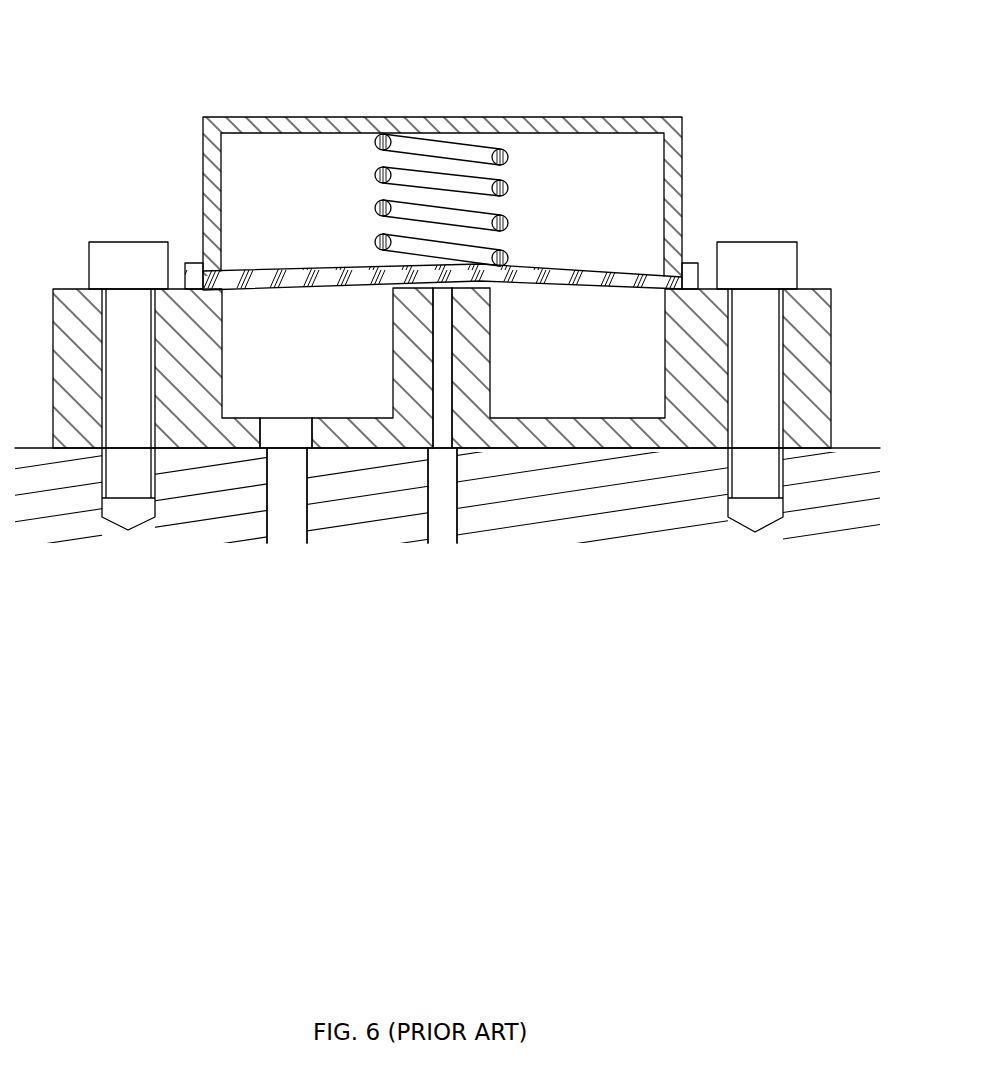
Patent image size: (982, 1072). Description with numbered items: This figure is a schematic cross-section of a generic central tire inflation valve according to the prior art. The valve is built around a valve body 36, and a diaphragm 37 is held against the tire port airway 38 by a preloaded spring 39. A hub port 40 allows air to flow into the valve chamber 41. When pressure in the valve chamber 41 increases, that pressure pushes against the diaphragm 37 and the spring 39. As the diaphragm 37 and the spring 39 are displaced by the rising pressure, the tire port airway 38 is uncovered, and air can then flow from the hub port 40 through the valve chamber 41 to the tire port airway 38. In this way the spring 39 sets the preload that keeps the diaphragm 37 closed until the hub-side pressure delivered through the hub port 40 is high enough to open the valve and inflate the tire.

The valve body 36 is at (433, 304).
The diaphragm 37 is at (487, 213).
The tire port airway 38 is at (483, 440).
The preloaded spring 39 is at (486, 166).
The hub port 40 is at (243, 516).
The valve chamber 41 is at (399, 242).